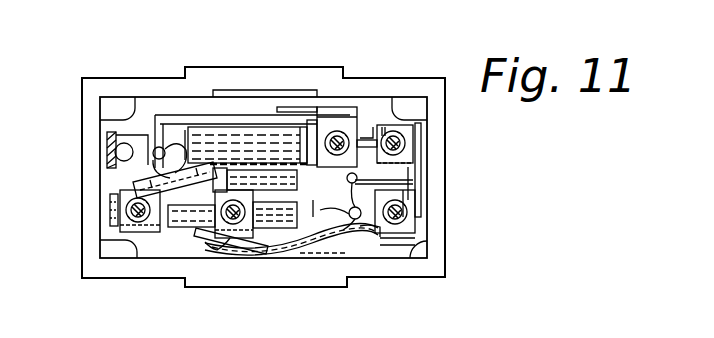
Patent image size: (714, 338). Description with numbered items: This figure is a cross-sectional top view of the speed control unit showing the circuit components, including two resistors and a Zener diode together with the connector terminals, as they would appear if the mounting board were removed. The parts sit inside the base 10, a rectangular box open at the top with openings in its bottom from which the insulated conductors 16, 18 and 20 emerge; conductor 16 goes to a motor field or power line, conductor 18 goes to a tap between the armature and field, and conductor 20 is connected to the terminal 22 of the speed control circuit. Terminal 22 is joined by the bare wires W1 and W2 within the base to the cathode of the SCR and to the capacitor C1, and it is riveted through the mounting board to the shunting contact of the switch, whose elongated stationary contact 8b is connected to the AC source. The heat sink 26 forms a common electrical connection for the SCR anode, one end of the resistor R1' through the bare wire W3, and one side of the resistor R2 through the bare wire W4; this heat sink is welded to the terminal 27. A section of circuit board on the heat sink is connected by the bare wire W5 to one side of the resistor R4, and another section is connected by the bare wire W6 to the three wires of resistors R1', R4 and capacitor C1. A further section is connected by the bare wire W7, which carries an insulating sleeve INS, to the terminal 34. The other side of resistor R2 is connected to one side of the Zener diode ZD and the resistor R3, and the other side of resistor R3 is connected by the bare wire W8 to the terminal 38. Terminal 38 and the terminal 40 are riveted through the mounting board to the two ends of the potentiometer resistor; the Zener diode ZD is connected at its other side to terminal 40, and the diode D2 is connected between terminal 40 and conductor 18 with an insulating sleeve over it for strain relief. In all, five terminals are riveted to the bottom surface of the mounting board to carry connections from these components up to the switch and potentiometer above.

The base 10 is at (118, 82).
The elongated stationary contact 8b is at (106, 135).
The insulated conductor 16 is at (112, 166).
The diode D2 is at (120, 186).
The insulated conductor 18 is at (100, 203).
The terminal 40 is at (103, 225).
The bare wire W6 is at (170, 140).
The heat sink 26 is at (173, 116).
The resistor R2 is at (207, 130).
The resistor R1' is at (255, 115).
The capacitor C1 is at (312, 127).
The terminal 27 is at (323, 110).
The bare wire W1 is at (373, 127).
The bare wire W2 is at (382, 127).
The terminal 22 is at (388, 127).
The insulated conductor 20 is at (430, 143).
The bare wire W3 is at (405, 182).
The terminal 34 is at (410, 228).
The bare wire W4 is at (357, 185).
The terminal 38 is at (240, 243).
The resistor R3 is at (293, 217).
The Zener diode ZD is at (173, 217).
The resistor R4 is at (197, 243).
The bare wire W8 is at (217, 250).
The insulating sleeve INS is at (357, 250).
The bare wire W5 is at (372, 230).
The bare wire W7 is at (325, 260).